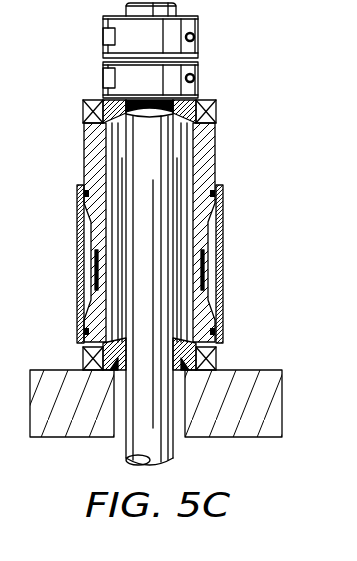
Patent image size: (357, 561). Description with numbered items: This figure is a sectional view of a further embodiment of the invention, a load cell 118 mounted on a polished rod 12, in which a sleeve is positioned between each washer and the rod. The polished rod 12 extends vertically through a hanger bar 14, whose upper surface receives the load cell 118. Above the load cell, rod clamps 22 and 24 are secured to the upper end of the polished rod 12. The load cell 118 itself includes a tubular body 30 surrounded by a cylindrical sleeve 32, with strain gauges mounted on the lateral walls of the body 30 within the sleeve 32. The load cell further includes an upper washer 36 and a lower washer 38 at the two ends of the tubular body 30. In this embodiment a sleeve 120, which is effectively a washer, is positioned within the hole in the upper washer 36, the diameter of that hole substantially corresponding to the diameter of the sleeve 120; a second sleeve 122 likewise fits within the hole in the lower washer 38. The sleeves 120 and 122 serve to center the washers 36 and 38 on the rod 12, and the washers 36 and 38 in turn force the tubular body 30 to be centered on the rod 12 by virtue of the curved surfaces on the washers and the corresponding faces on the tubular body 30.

The polished rod 12 is at (174, 452).
The hanger bar 14 is at (248, 410).
The rod clamp 22 is at (103, 32).
The rod clamp 24 is at (103, 72).
The tubular body 30 is at (233, 267).
The cylindrical sleeve 32 is at (77, 246).
The upper washer 36 is at (83, 108).
The lower washer 38 is at (83, 360).
The load cell 118 is at (258, 78).
The sleeve 120 is at (216, 105).
The sleeve 122 is at (210, 368).